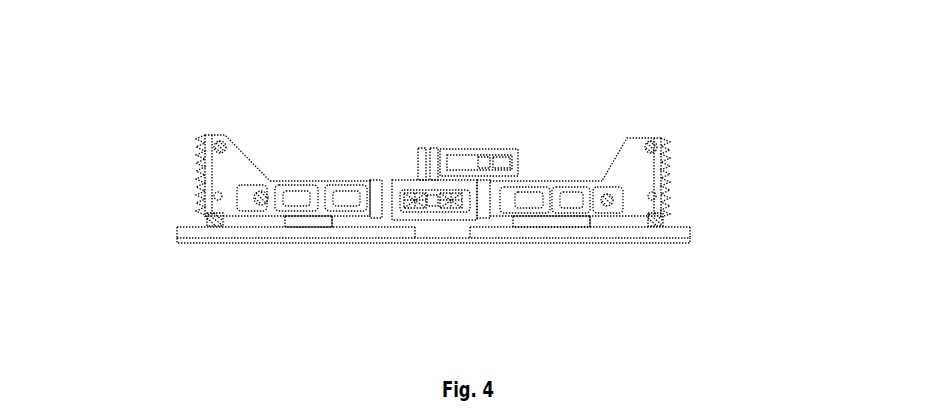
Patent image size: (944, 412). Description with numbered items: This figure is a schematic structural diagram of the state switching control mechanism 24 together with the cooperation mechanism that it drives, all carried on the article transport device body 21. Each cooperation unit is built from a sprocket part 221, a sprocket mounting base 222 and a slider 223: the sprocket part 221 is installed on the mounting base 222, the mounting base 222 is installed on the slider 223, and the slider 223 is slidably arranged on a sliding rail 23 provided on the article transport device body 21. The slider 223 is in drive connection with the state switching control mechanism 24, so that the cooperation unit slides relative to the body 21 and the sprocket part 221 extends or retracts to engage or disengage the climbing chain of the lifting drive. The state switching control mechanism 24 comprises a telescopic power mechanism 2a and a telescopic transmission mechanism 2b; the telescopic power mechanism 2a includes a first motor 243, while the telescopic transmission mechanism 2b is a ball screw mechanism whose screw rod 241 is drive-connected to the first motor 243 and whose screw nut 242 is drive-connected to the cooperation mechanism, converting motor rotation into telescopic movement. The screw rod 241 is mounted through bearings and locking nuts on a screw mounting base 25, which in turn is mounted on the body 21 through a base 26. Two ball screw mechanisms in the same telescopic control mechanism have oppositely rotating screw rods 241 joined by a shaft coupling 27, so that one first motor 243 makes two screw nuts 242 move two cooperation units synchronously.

The article transport device body 21 is at (695, 245).
The sliding rail 23 is at (692, 231).
The state switching control mechanism 24 is at (430, 158).
The screw mounting base 25 is at (400, 182).
The base 26 is at (413, 222).
The shaft coupling 27 is at (468, 222).
The telescopic power mechanism 2a is at (423, 158).
The telescopic transmission mechanism 2b is at (297, 198).
The sprocket part 221 is at (197, 153).
The sprocket mounting base 222 is at (222, 135).
The slider 223 is at (293, 223).
The screw rod 241 is at (334, 219).
The screw nut 242 is at (355, 182).
The first motor 243 is at (505, 150).